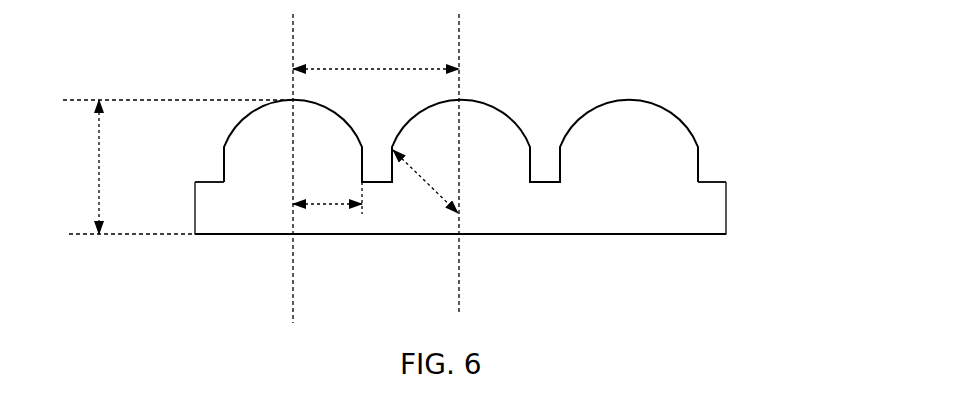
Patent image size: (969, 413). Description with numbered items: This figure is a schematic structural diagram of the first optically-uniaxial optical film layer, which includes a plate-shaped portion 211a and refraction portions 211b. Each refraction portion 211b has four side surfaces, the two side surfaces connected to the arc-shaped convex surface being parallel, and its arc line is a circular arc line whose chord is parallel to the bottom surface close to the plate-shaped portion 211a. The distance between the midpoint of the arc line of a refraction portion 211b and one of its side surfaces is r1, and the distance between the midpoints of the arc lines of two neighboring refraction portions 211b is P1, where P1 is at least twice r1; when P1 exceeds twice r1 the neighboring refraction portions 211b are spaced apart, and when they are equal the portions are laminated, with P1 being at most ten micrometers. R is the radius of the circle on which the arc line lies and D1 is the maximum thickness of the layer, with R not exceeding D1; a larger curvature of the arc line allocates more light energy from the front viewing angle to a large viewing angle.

The plate-shaped portion 211a is at (683, 213).
The refraction portion 211b is at (683, 146).
The distance between midpoints of arc lines of two neighboring refraction portions P1 is at (376, 46).
The maximum thickness of the first optically-uniaxial optical film layer D1 is at (77, 167).
The distance between midpoint of the arc line and one side surface r1 is at (327, 188).
The radius of the circle on which the arc line is located R is at (425, 181).